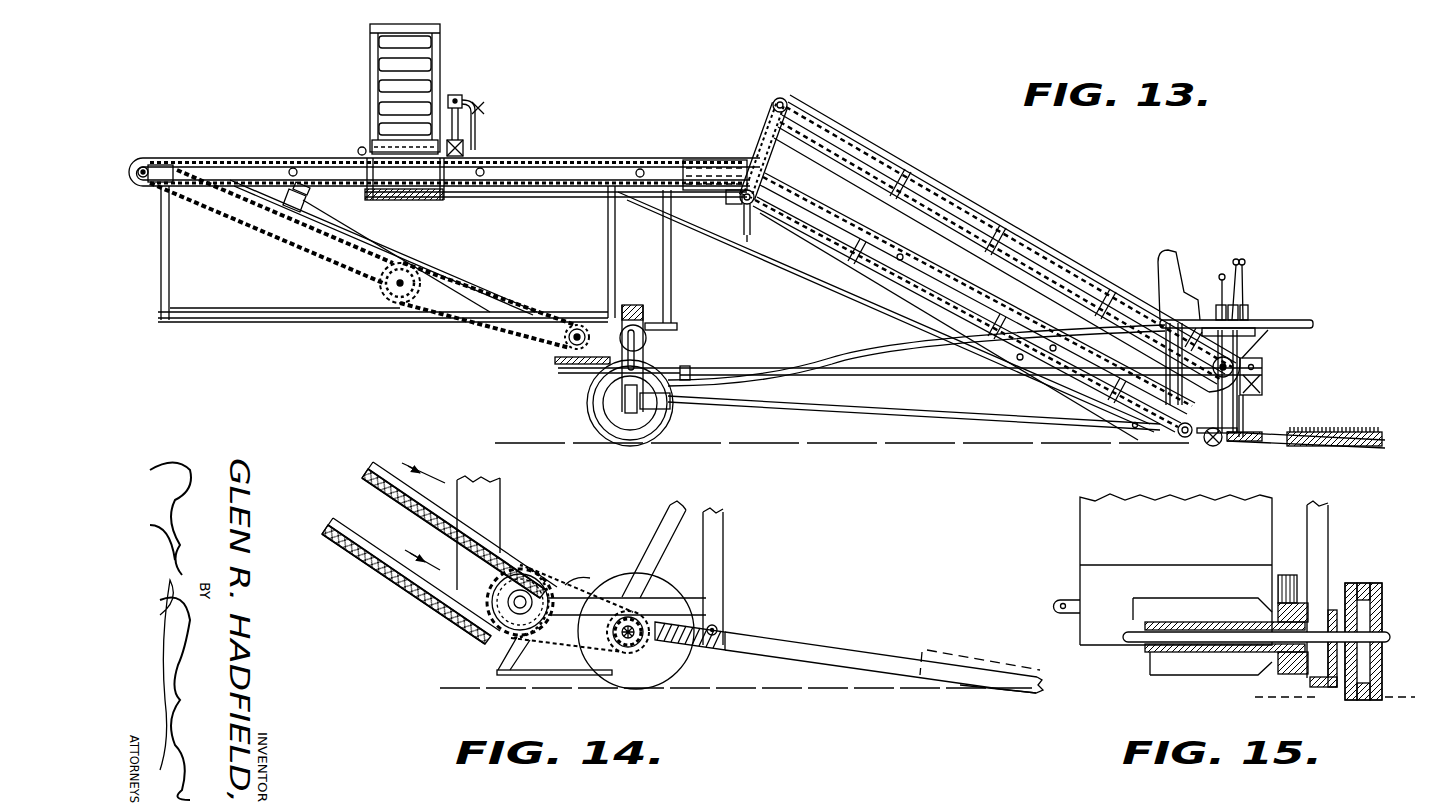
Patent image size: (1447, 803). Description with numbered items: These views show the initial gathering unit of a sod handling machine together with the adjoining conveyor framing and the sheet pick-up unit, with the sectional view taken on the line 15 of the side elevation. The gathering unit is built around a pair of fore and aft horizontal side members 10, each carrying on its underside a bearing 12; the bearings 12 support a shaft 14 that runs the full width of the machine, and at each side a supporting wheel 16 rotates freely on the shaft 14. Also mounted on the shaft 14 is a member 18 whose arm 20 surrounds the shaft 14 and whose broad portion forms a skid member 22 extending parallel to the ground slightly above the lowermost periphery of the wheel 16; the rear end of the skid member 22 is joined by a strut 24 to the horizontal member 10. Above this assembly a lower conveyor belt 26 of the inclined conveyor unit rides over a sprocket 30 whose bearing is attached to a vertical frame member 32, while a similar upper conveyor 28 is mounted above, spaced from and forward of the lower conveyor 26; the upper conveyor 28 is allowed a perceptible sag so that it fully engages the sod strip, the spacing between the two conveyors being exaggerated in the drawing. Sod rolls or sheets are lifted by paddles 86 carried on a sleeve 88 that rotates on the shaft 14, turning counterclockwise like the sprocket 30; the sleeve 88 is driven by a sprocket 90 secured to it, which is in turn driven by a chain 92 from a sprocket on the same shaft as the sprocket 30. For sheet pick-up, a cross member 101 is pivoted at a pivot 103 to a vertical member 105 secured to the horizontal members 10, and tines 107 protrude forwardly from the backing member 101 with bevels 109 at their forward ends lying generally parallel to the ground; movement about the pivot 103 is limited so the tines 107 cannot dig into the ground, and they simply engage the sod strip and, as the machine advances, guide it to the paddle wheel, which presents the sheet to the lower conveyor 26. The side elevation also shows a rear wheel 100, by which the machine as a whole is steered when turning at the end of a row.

In FIG. 13, the horizontal side member 10 is at (1213, 412).
In FIG. 14, the horizontal side member 10 is at (678, 600).
In FIG. 15, the horizontal side member 10 is at (1332, 593).
In FIG. 15, the bearing 12 is at (1317, 655).
In FIG. 14, the shaft 14 is at (625, 650).
In FIG. 15, the shaft 14 is at (1388, 638).
In FIG. 13, the supporting wheel 16 is at (1212, 447).
In FIG. 14, the supporting wheel 16 is at (657, 588).
In FIG. 15, the supporting wheel 16 is at (1381, 623).
In FIG. 15, the member 18 is at (1365, 665).
In FIG. 15, the arm 20 is at (1365, 617).
In FIG. 13, the skid member 22 is at (1178, 440).
In FIG. 14, the skid member 22 is at (510, 676).
In FIG. 15, the skid member 22 is at (1333, 690).
In FIG. 14, the strut 24 is at (507, 655).
In FIG. 13, the lower conveyor belt 26 is at (1093, 387).
In FIG. 14, the lower conveyor belt 26 is at (388, 572).
In FIG. 13, the upper conveyor 28 is at (1048, 298).
In FIG. 14, the sprocket 30 is at (492, 588).
In FIG. 13, the vertical frame member 32 is at (1163, 373).
In FIG. 14, the vertical frame member 32 is at (500, 494).
In FIG. 14, the paddle 86 is at (607, 625).
In FIG. 14, the sleeve 88 is at (650, 635).
In FIG. 14, the sprocket 90 is at (577, 651).
In FIG. 14, the chain 92 is at (603, 587).
In FIG. 13, the rear wheel 100 is at (592, 403).
In FIG. 13, the cross member 101 is at (1236, 444).
In FIG. 14, the cross member 101 is at (693, 652).
In FIG. 14, the pivot 103 is at (720, 625).
In FIG. 13, the vertical member 105 is at (1252, 408).
In FIG. 14, the vertical member 105 is at (733, 543).
In FIG. 13, the tine 107 is at (1267, 438).
In FIG. 14, the tine 107 is at (805, 660).
In FIG. 14, the bevel 109 is at (947, 688).
In FIG. 14, the section line 15 is at (580, 728).